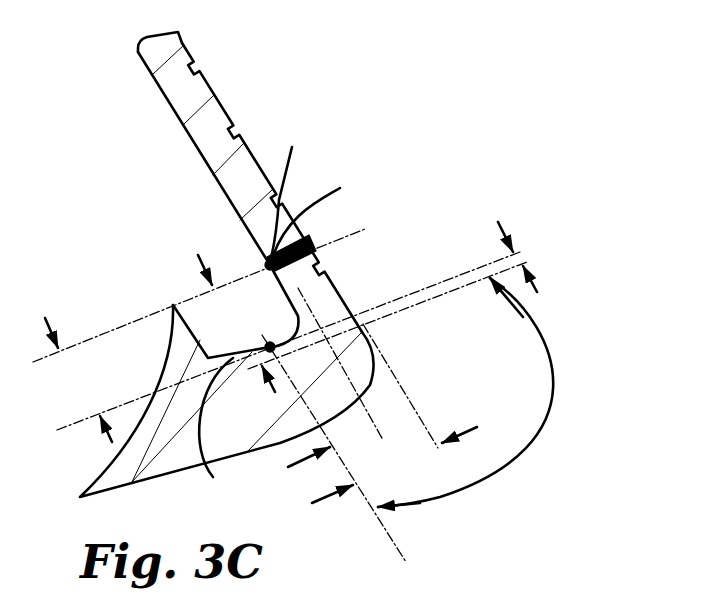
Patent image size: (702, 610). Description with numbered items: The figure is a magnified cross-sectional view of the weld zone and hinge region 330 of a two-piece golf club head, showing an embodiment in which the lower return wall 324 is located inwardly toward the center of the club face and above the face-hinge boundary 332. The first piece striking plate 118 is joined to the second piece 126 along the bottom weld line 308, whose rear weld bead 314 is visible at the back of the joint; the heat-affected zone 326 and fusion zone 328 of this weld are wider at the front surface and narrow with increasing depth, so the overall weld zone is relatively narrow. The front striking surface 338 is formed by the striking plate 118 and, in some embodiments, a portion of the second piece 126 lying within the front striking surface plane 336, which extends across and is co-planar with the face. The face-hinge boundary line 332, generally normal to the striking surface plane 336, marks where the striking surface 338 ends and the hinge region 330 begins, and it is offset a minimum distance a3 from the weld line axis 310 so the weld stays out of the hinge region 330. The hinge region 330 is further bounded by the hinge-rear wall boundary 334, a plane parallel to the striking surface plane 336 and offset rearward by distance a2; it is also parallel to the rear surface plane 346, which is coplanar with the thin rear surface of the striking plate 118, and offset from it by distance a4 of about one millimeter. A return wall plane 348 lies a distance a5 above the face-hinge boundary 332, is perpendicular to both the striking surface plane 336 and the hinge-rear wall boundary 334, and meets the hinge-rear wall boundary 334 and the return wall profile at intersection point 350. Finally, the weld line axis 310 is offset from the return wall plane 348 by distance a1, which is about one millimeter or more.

The first piece striking plate 118 is at (170, 53).
The front striking surface 338 is at (232, 117).
The heat-affected zone 326 is at (293, 195).
The fusion zone 328 is at (317, 215).
The bottom weld line 308 is at (312, 232).
The weld line axis 310 is at (360, 228).
The rear weld bead 314 is at (265, 263).
The intersection point 350 is at (271, 345).
The return wall plane 348 is at (410, 290).
The face-hinge boundary line 332 is at (425, 302).
The rear surface plane 346 is at (375, 427).
The front striking surface plane 336 is at (415, 418).
The hinge region 330 is at (563, 400).
The hinge-rear wall boundary 334 is at (387, 535).
The second piece 126 is at (127, 475).
The lower return wall 324 is at (216, 428).
The offset distance a1 is at (78, 380).
The offset distance a2 is at (359, 478).
The offset distance a3 is at (268, 345).
The offset distance a4 is at (325, 444).
The distance a5 is at (532, 257).